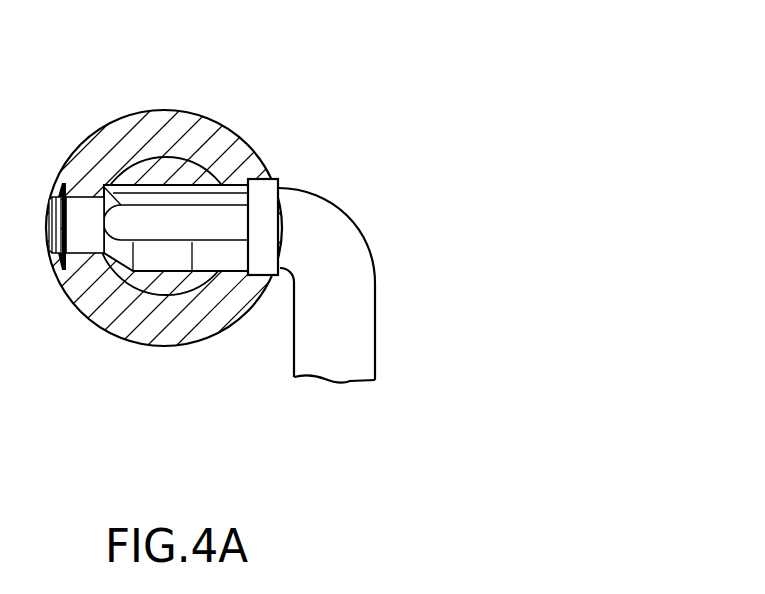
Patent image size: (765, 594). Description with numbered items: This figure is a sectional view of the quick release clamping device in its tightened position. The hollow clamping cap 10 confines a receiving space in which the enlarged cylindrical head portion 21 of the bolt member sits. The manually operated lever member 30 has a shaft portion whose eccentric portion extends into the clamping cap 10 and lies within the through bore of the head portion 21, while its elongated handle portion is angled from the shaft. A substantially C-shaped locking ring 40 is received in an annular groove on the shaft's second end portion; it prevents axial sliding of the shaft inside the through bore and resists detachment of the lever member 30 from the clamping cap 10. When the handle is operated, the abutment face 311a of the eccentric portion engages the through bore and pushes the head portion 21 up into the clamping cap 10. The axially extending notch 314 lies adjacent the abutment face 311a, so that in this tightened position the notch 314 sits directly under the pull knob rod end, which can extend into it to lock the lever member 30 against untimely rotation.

The clamping cap 10 is at (203, 133).
The head portion 21 is at (167, 282).
The notch 314 is at (227, 230).
The abutment face 311a is at (190, 250).
The locking ring 40 is at (57, 265).
The lever member 30 is at (368, 243).